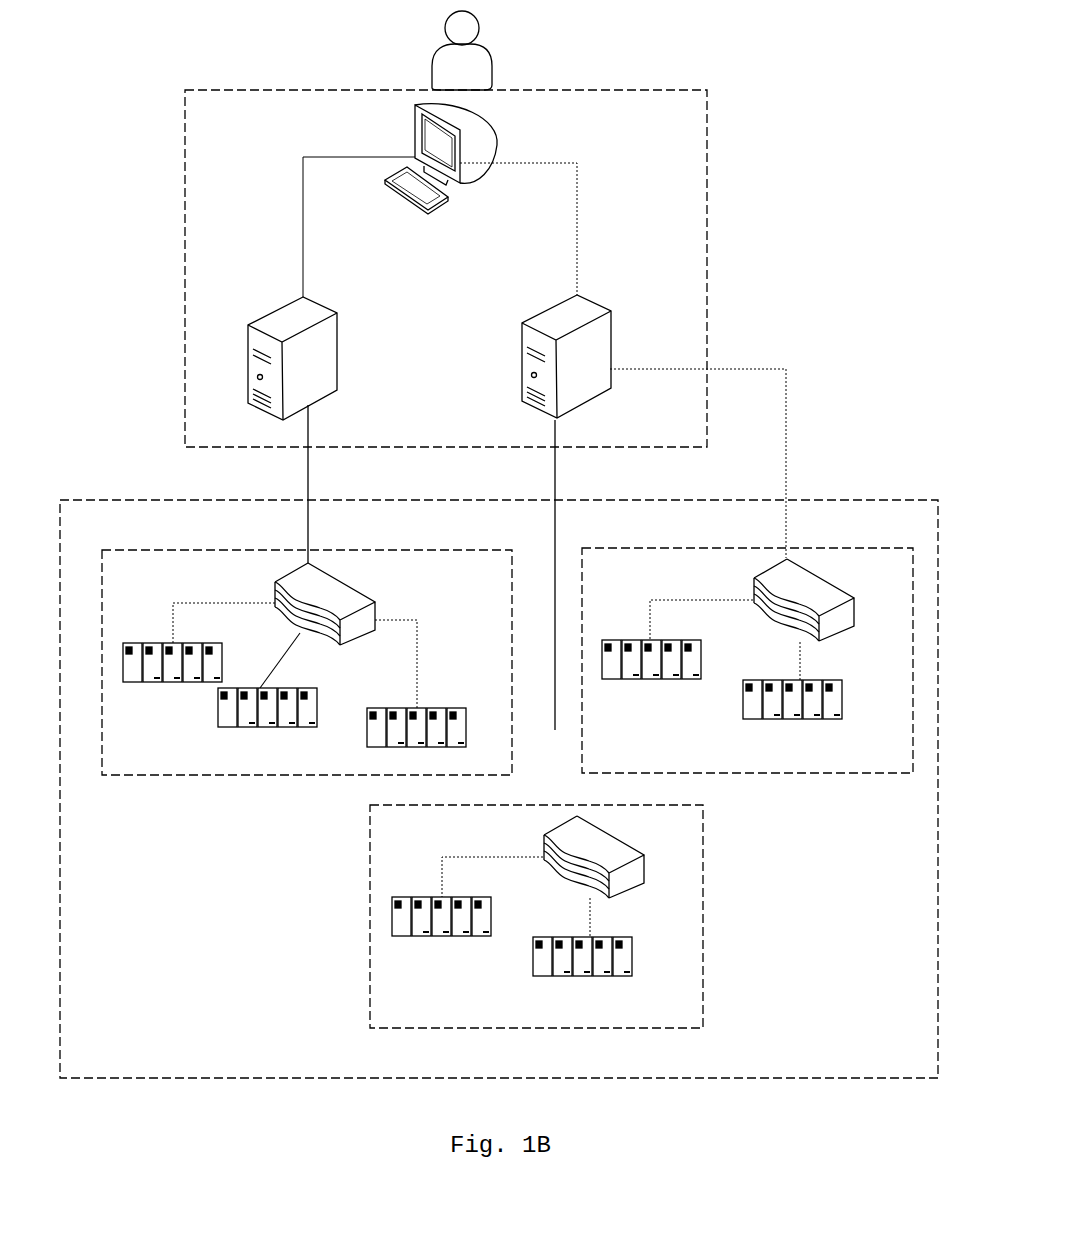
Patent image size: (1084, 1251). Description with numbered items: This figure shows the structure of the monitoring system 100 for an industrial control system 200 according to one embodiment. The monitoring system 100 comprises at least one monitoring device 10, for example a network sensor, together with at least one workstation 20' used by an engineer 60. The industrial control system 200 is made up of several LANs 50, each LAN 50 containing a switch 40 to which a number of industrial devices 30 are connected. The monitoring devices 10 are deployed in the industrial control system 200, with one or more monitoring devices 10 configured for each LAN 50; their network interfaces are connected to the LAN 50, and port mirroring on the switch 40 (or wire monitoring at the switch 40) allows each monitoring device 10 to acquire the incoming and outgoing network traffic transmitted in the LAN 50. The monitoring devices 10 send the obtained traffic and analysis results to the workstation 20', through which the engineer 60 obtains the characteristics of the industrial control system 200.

The monitoring device 10 is at (337, 325).
The workstation 20' is at (473, 156).
The industrial device 30 is at (205, 645).
The switch 40 is at (345, 585).
The LAN 50 is at (412, 551).
The engineer 60 is at (492, 56).
The monitoring system 100 is at (710, 130).
The industrial control system 200 is at (792, 498).